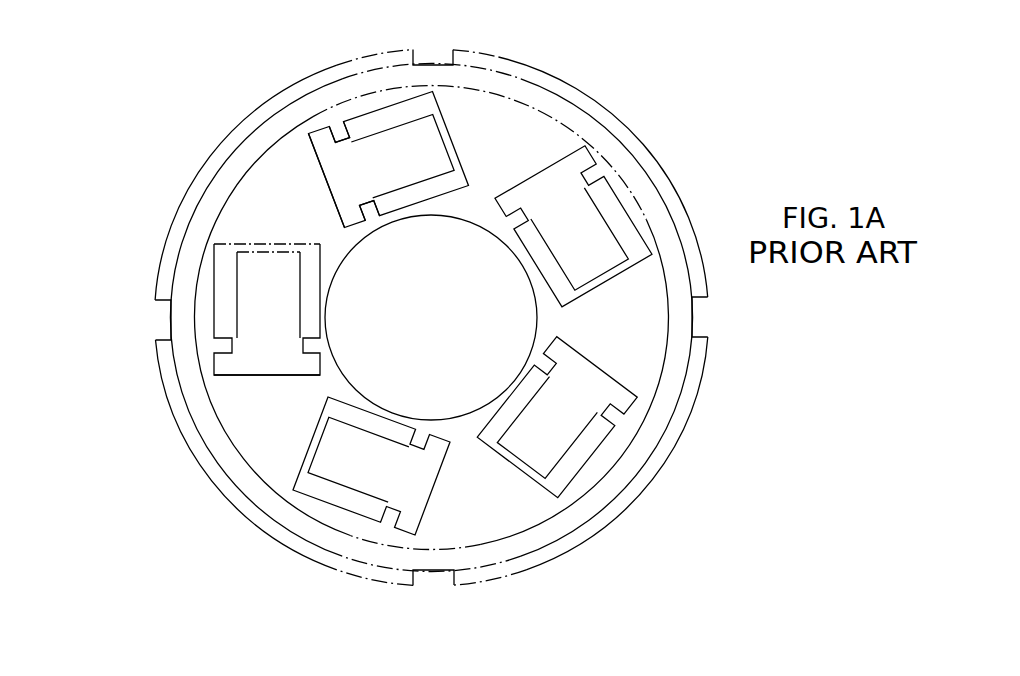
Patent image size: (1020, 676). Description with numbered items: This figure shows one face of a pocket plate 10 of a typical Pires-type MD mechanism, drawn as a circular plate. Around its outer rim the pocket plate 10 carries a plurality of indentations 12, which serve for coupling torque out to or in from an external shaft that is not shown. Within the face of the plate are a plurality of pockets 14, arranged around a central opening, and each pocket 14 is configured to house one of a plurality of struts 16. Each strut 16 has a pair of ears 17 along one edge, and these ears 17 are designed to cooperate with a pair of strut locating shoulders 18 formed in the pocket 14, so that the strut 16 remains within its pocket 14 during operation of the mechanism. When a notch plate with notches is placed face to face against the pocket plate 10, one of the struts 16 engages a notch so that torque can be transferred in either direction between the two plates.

The pocket plate 10 is at (620, 118).
The indentations 12 is at (432, 53).
The pockets 14 is at (274, 246).
The struts 16 is at (254, 312).
The ears 17 is at (227, 363).
The strut locating shoulders 18 is at (333, 130).